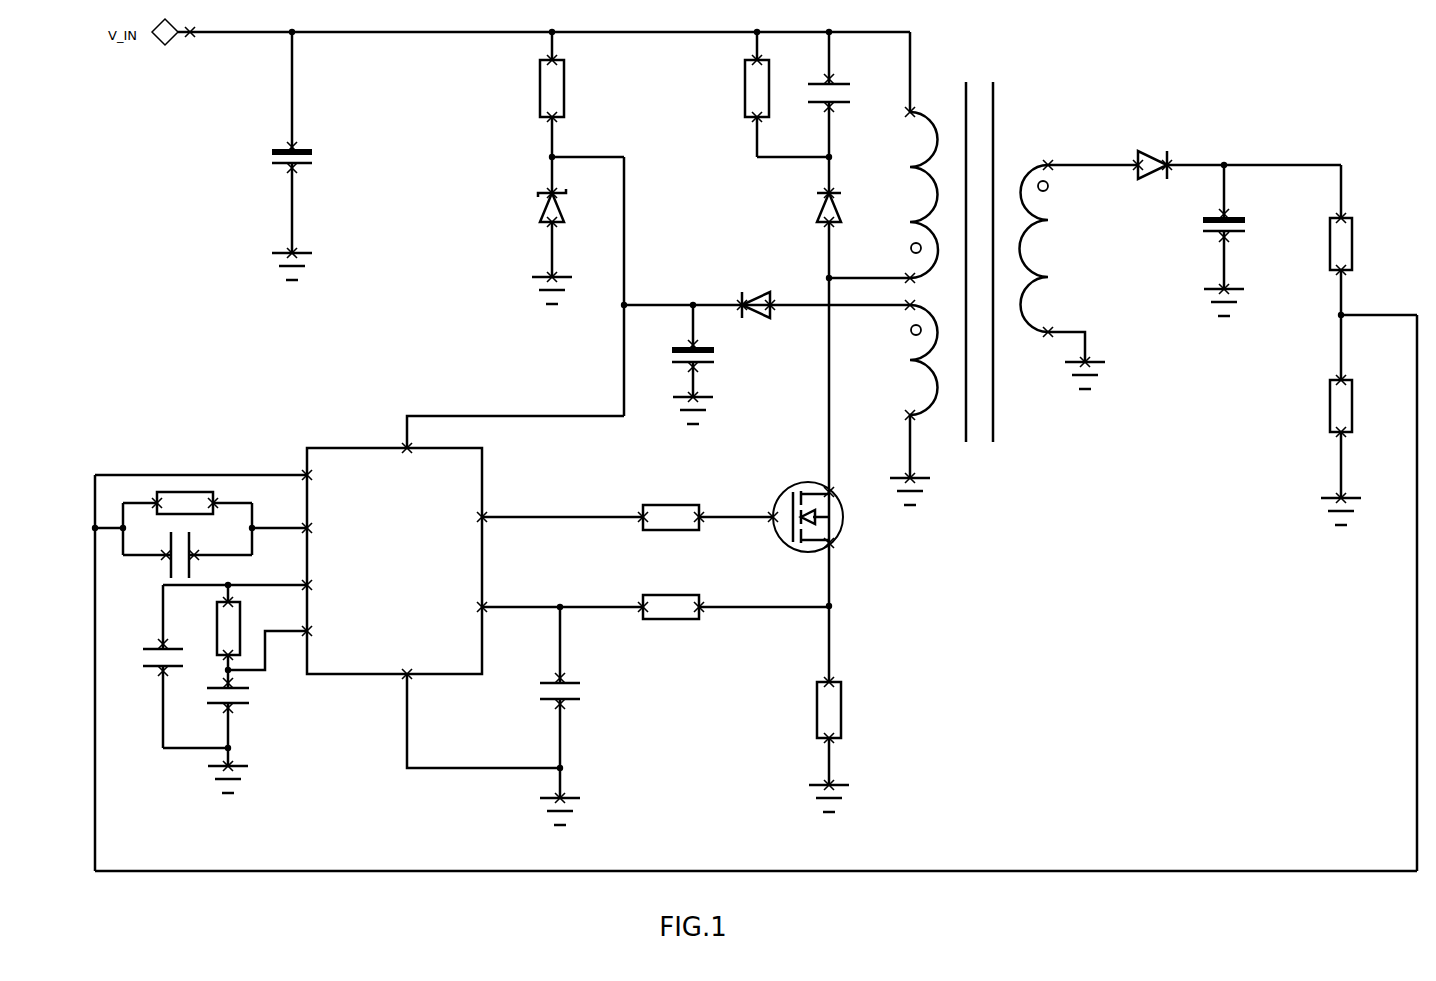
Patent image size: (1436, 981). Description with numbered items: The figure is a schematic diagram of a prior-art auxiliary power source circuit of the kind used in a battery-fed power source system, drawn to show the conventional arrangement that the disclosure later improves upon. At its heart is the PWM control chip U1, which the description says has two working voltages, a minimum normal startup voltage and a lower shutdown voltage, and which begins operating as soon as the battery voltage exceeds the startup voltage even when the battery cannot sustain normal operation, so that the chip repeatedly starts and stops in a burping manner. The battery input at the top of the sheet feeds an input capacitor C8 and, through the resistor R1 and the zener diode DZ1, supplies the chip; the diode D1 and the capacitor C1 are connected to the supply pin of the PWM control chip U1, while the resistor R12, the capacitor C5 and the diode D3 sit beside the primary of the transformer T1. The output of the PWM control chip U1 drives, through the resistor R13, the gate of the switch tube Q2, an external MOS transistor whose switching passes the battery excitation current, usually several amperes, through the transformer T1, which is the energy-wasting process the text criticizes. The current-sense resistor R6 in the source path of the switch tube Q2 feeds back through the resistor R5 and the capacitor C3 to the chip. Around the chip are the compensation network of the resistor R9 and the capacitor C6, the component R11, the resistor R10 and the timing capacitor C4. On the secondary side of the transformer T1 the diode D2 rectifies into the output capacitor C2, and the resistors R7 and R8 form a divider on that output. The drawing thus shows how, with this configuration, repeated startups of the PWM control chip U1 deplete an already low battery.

The input electrolytic capacitor C8 is at (297, 172).
The resistor R1 is at (559, 112).
The zener diode DZ1 is at (565, 244).
The resistor R12 is at (787, 94).
The snubber capacitor C5 is at (830, 112).
The diode D3 is at (818, 207).
The transformer T1 is at (967, 287).
The diode D1 is at (767, 293).
The electrolytic capacitor C1 is at (713, 363).
The PWM control chip U1 is at (423, 544).
The resistor R9 is at (187, 500).
The capacitor C6 is at (187, 555).
The component R11 is at (184, 666).
The resistor R10 is at (216, 636).
The capacitor C4 is at (224, 746).
The gate resistor R13 is at (627, 508).
The switch tube Q2 is at (789, 514).
The resistor R5 is at (655, 598).
The capacitor C3 is at (495, 731).
The current sense resistor R6 is at (823, 758).
The output rectifier diode D2 is at (1194, 159).
The output electrolytic capacitor C2 is at (1227, 255).
The feedback resistor R7 is at (1327, 272).
The feedback resistor R8 is at (1332, 465).